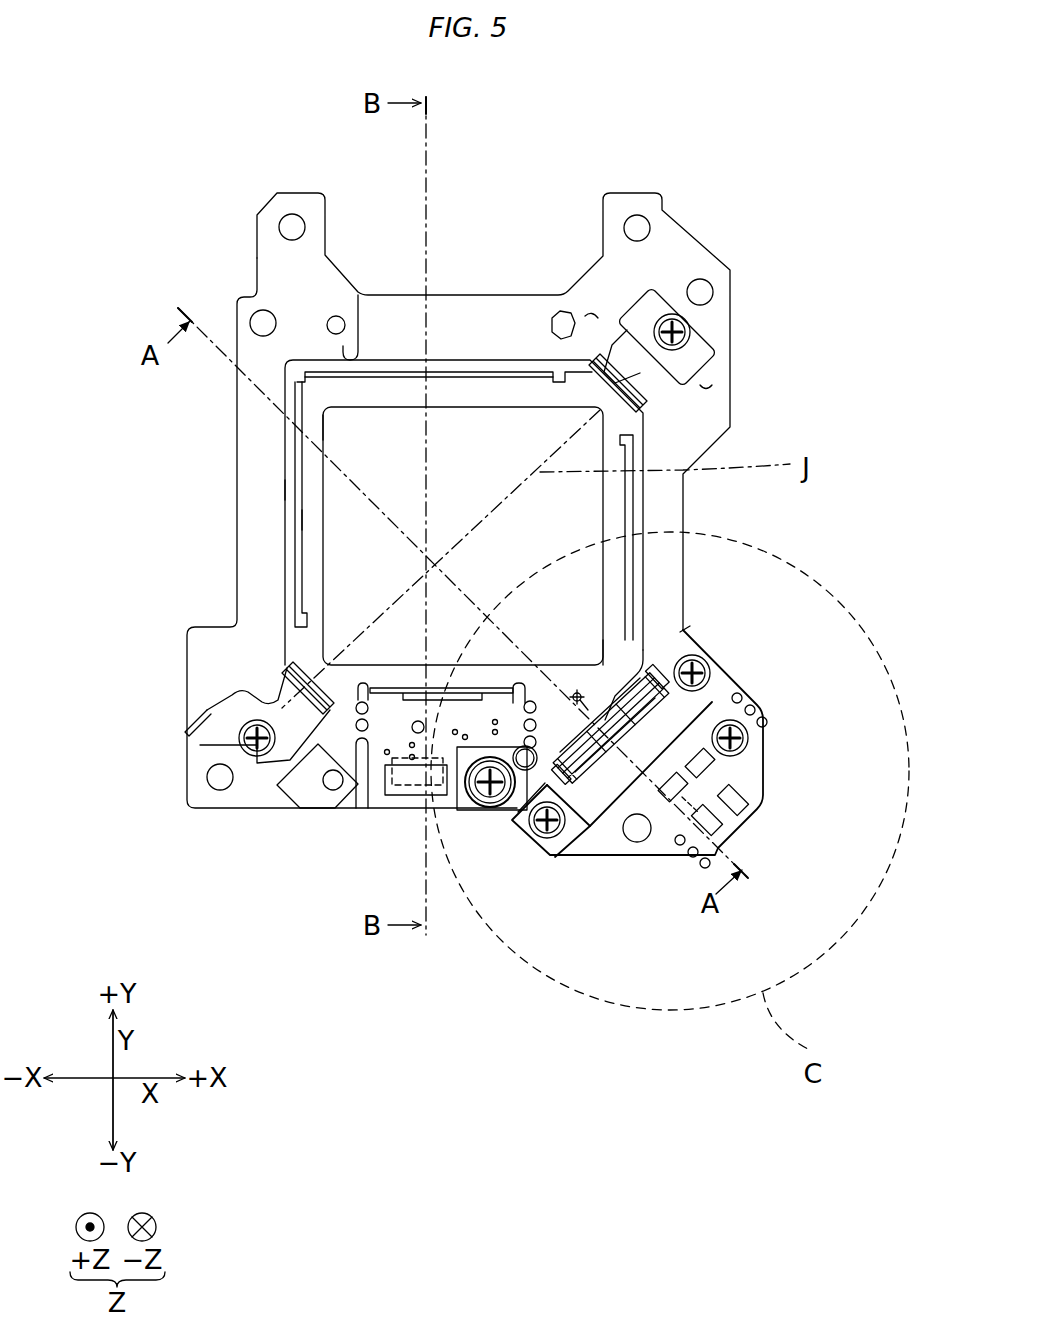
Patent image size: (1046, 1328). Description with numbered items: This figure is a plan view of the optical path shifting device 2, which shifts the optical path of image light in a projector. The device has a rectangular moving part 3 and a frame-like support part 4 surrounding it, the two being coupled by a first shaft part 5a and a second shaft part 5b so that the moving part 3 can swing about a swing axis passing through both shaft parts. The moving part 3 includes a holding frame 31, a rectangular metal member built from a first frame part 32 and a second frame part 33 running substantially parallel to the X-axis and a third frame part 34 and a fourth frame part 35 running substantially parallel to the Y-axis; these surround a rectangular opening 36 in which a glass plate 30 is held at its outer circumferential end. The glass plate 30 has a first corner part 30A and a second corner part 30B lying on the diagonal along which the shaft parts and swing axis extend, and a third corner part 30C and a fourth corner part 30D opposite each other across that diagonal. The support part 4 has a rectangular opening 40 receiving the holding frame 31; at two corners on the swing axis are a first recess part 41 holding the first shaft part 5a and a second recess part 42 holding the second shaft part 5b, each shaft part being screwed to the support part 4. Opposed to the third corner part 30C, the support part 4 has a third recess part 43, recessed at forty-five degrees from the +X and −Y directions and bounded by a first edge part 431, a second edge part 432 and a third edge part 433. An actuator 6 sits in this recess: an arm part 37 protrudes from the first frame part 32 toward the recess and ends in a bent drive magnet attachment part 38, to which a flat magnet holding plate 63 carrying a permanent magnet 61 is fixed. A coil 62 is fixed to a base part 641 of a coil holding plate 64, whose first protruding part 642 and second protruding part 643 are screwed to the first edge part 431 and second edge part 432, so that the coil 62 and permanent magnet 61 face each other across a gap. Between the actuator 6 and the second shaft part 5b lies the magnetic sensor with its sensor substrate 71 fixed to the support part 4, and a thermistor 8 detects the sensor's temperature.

The optical path shifting device 2 is at (160, 168).
The moving part 3 is at (572, 178).
The support part 4 is at (397, 308).
The first shaft part 5a is at (630, 357).
The second shaft part 5b is at (277, 707).
The actuator 6 is at (828, 712).
The thermistor 8 is at (403, 795).
The glass plate 30 is at (498, 425).
The first corner part 30A is at (633, 420).
The second corner part 30B is at (337, 652).
The third corner part 30C is at (600, 640).
The fourth corner part 30D is at (335, 413).
The holding frame 31 is at (472, 390).
The first frame part 32 is at (340, 767).
The second frame part 33 is at (443, 388).
The third frame part 34 is at (617, 507).
The fourth frame part 35 is at (313, 483).
The opening 36 is at (338, 518).
The arm part 37 is at (486, 795).
The drive magnet attachment part 38 is at (568, 702).
The opening 40 is at (358, 295).
The first recess part 41 is at (663, 367).
The second recess part 42 is at (256, 758).
The third recess part 43 is at (607, 815).
The first edge part 431 is at (548, 852).
The second edge part 432 is at (687, 630).
The third edge part 433 is at (635, 848).
The permanent magnet 61 is at (657, 725).
The coil 62 is at (648, 743).
The magnet holding plate 63 is at (670, 712).
The coil holding plate 64 is at (660, 765).
The base part 641 is at (670, 827).
The first protruding part 642 is at (530, 843).
The second protruding part 643 is at (718, 670).
The sensor substrate 71 is at (387, 805).